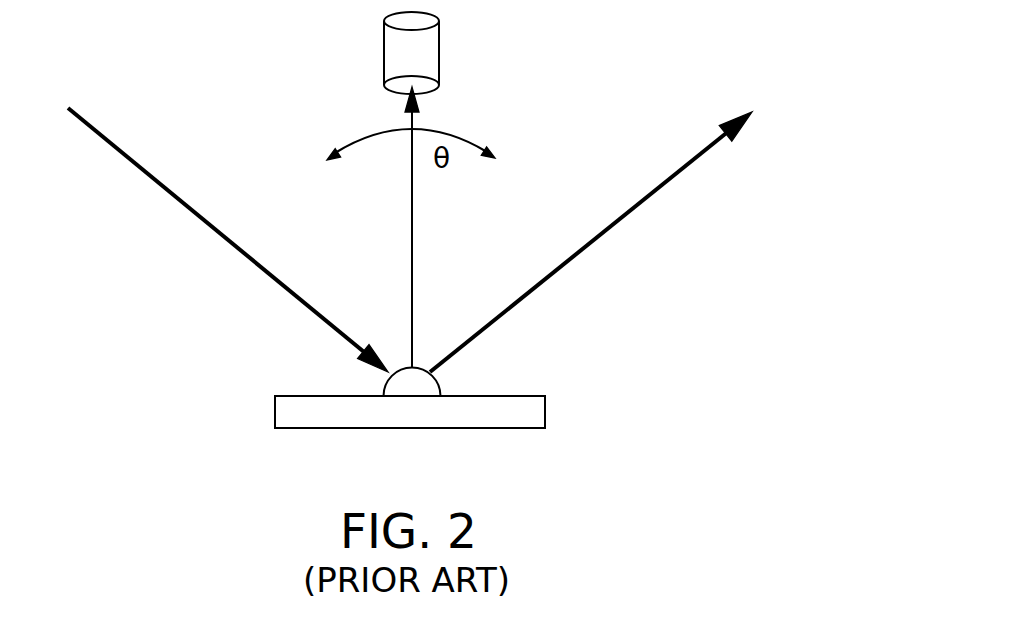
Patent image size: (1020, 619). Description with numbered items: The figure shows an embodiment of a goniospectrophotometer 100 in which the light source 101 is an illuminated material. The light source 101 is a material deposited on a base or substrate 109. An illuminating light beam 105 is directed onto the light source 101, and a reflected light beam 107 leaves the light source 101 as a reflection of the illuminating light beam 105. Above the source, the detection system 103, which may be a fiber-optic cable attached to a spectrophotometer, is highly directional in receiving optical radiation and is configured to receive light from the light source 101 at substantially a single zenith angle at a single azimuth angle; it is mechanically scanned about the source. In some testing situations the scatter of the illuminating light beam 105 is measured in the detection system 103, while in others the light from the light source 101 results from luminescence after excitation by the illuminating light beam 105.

The goniospectrophotometer 100 is at (556, 66).
The light source 101 is at (425, 367).
The detection system 103 is at (440, 50).
The illuminating light beam 105 is at (147, 168).
The reflected light beam 107 is at (658, 190).
The substrate 109 is at (488, 430).